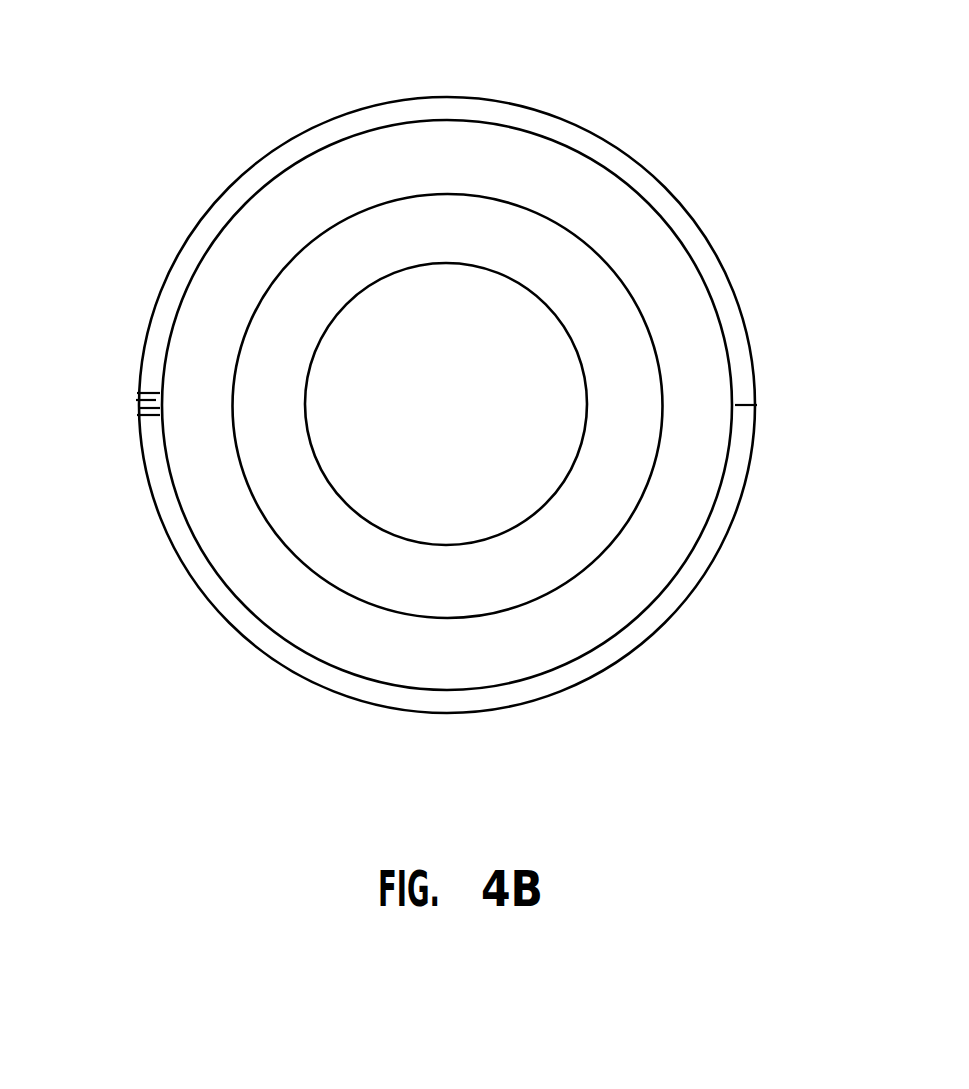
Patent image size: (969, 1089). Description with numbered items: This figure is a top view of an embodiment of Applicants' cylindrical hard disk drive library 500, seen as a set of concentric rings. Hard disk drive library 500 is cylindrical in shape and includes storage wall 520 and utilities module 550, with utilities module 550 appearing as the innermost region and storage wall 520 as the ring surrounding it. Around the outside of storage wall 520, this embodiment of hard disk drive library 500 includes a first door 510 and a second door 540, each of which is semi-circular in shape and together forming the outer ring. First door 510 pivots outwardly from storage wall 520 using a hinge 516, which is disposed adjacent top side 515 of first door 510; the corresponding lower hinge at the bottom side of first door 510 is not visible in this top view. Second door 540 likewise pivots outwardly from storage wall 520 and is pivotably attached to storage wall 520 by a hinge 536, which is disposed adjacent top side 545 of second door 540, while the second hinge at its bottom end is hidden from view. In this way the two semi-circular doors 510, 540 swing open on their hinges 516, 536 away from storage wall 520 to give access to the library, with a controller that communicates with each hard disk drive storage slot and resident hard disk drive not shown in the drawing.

The hard disk drive library 500 is at (572, 688).
The first door 510 is at (738, 513).
The second door 540 is at (750, 312).
The top side of second door 545 is at (167, 292).
The hinge 536 is at (147, 397).
The hinge 516 is at (147, 412).
The top side of first door 515 is at (153, 468).
The storage wall 520 is at (638, 228).
The utilities module 550 is at (469, 230).